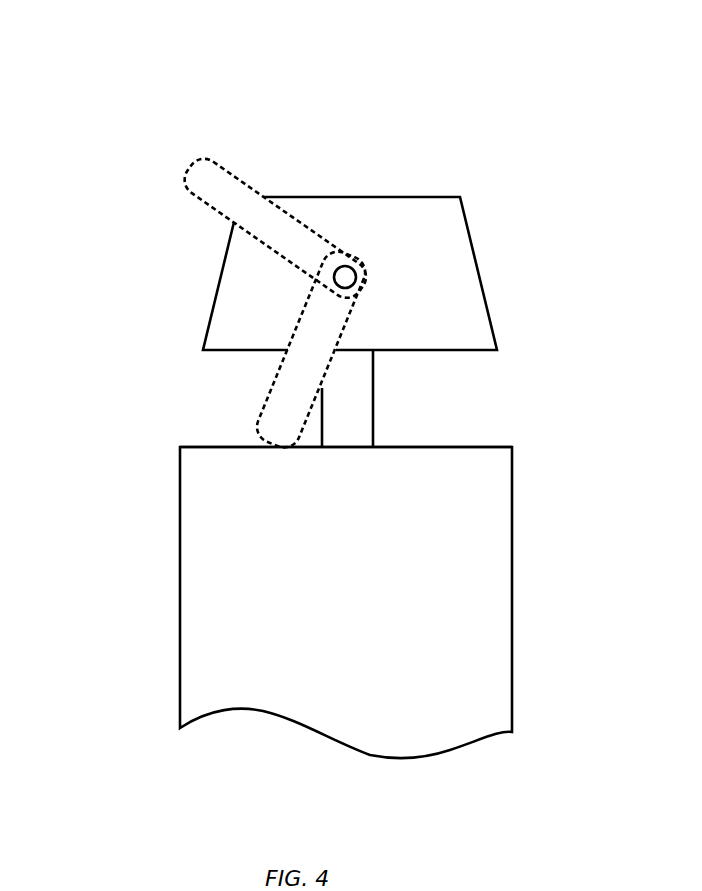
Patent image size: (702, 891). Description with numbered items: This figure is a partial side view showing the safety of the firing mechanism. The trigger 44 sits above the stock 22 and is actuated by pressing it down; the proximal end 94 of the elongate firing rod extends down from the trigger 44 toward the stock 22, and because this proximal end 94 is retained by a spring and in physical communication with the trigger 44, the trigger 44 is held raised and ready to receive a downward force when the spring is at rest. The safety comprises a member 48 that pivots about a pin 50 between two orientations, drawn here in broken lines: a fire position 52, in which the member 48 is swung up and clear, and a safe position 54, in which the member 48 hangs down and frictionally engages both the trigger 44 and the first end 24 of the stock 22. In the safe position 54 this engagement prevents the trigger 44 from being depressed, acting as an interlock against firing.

The stock 22 is at (362, 667).
The first end of stock 24 is at (180, 452).
The trigger 44 is at (453, 235).
The member 48 is at (357, 317).
The pin 50 is at (335, 277).
The fire position 52 is at (168, 150).
The safe position 54 is at (253, 437).
The proximal end of firing rod 94 is at (357, 410).